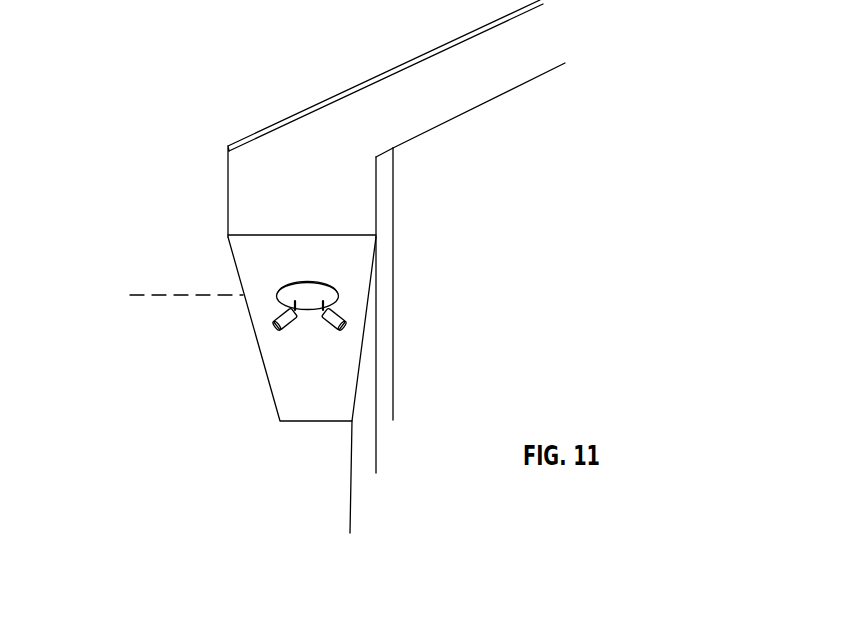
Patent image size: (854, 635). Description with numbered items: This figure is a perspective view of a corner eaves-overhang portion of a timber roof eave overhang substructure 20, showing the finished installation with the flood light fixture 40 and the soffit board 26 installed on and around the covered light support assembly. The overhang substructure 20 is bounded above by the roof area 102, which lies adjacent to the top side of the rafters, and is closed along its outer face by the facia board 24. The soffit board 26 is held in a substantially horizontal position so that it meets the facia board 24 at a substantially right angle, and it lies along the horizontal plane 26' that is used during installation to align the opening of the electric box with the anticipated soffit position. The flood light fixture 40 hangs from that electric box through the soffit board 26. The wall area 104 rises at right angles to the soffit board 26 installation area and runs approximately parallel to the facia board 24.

The roof eave overhang substructure 20 is at (212, 335).
The facia board 24 is at (203, 160).
The soffit board 26 is at (269, 341).
The horizontal plane 26' is at (181, 240).
The flood light fixture 40 is at (307, 325).
The roof area 102 is at (410, 55).
The wall area 104 is at (365, 468).